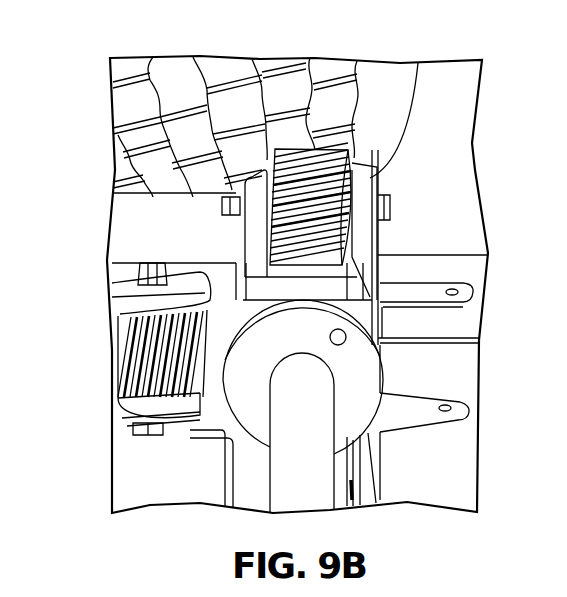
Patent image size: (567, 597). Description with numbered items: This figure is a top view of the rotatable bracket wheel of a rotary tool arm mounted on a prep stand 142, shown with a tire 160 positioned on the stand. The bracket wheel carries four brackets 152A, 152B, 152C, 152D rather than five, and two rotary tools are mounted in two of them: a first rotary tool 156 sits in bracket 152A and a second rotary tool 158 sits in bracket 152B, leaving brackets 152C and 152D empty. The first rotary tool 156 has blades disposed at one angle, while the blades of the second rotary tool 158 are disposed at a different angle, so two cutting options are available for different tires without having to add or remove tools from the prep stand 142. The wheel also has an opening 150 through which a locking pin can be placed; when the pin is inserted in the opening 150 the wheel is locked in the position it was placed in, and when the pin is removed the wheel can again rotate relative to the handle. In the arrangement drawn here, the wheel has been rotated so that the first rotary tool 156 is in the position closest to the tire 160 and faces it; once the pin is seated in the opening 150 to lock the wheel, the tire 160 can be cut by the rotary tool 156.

The prep stand 142 is at (88, 110).
The opening 150 is at (340, 337).
The bracket 152A is at (240, 258).
The bracket 152B is at (197, 430).
The bracket 152C is at (254, 484).
The bracket 152D is at (428, 358).
The first rotary tool 156 is at (388, 203).
The second rotary tool 158 is at (125, 315).
The tire 160 is at (288, 83).